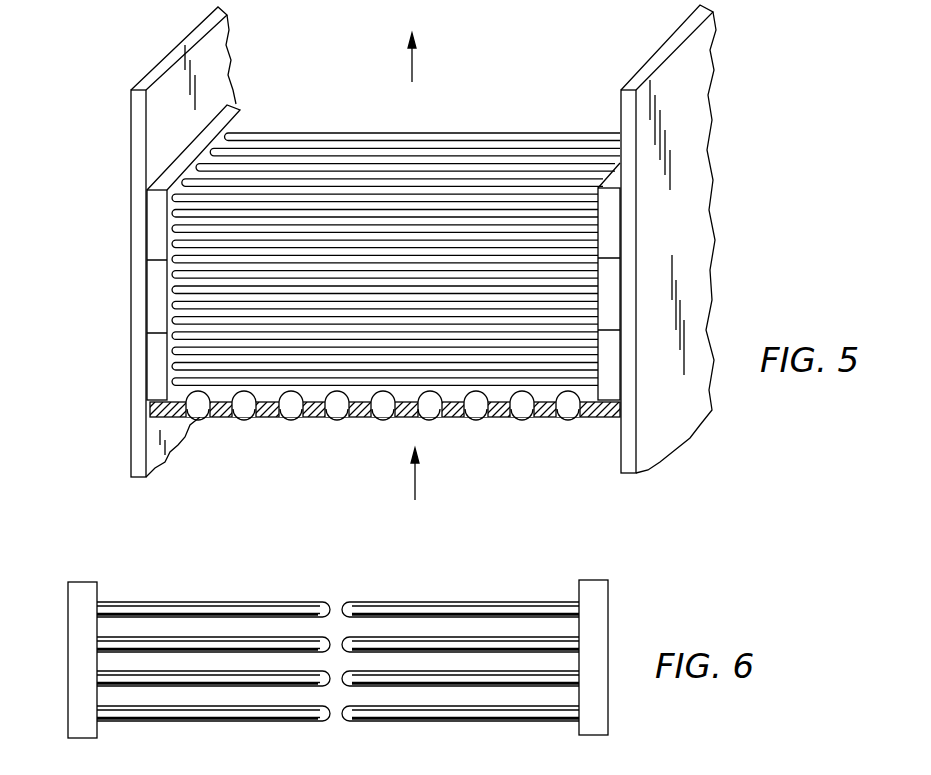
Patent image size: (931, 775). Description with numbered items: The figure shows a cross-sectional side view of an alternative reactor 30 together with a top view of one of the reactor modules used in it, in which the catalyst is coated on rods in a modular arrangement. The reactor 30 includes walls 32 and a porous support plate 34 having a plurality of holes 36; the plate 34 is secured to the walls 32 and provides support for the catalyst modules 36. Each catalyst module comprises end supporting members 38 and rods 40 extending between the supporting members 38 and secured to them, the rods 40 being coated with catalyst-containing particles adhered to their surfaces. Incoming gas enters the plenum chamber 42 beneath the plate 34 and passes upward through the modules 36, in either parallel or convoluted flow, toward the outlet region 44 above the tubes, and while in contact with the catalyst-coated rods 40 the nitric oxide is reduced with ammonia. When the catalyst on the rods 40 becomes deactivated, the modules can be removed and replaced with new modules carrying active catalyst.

In FIG. 5, the reactor 30 is at (729, 104).
In FIG. 5, the walls 32 is at (205, 60).
In FIG. 5, the porous support plate 34 is at (307, 420).
In FIG. 5, the catalyst modules 36 is at (356, 163).
In FIG. 6, the catalyst modules 36 is at (442, 601).
In FIG. 5, the end supporting members 38 is at (176, 170).
In FIG. 6, the end supporting members 38 is at (80, 597).
In FIG. 5, the rods 40 is at (192, 300).
In FIG. 6, the rods 40 is at (260, 645).
In FIG. 5, the plenum chamber 42 is at (358, 480).
In FIG. 5, the outlet flow 44 is at (500, 82).